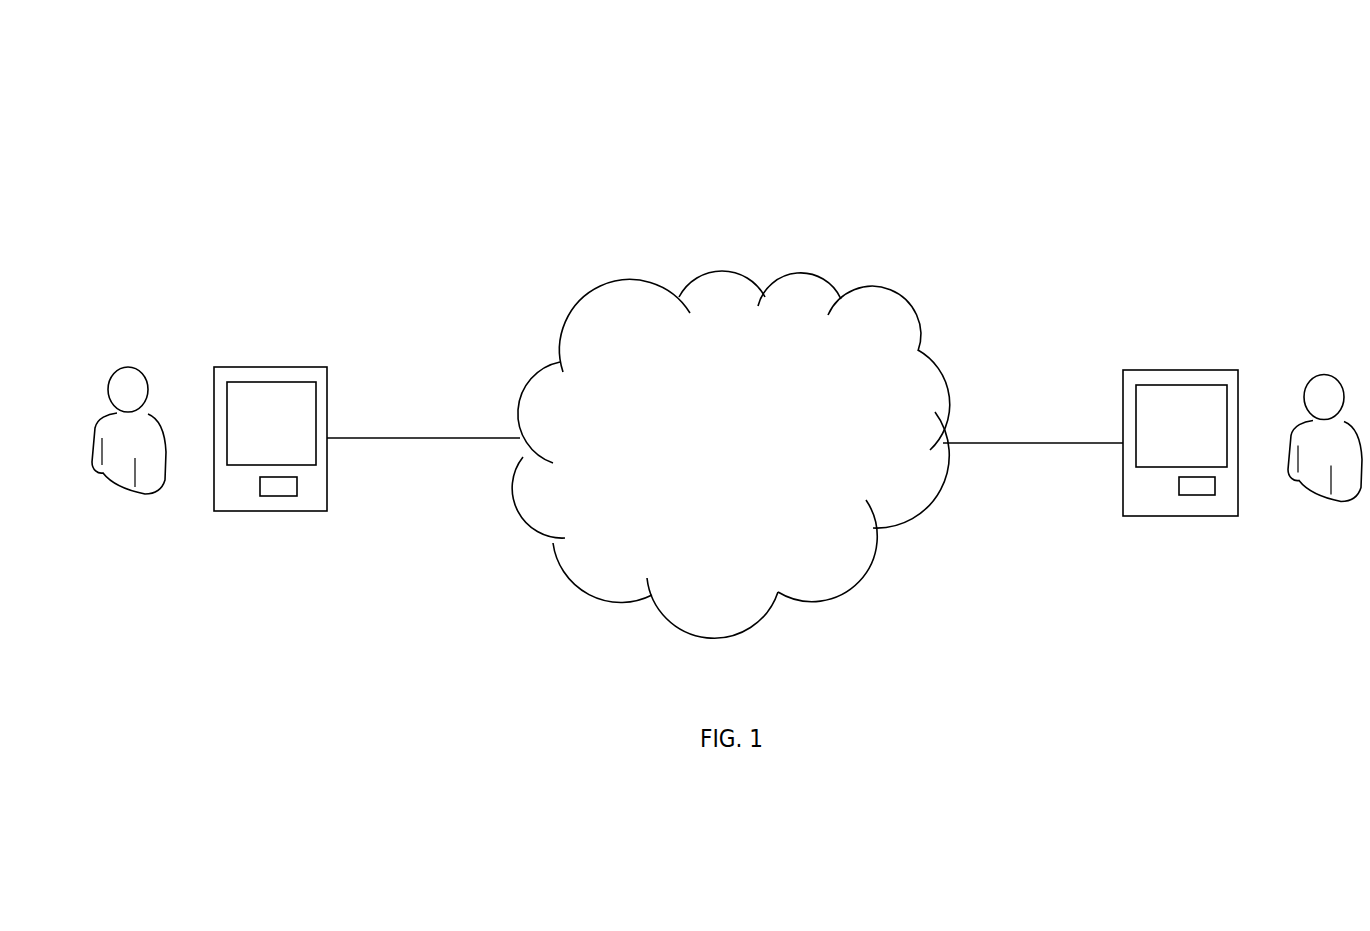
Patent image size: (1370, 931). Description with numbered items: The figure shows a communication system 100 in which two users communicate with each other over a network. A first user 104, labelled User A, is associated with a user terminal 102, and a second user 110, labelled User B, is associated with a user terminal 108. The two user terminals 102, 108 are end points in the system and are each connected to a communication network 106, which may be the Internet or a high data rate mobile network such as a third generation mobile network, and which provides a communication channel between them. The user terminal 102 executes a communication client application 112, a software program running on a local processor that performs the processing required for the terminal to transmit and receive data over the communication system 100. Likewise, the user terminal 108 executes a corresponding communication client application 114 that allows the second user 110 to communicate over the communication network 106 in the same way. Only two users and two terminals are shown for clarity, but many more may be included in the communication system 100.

The communication system 100 is at (218, 158).
The user terminal 102 is at (288, 489).
The first user 104 is at (128, 367).
The communication network 106 is at (855, 287).
The user terminal 108 is at (1197, 492).
The second user 110 is at (1324, 375).
The communication client application 112 is at (297, 495).
The communication client application 114 is at (1215, 495).